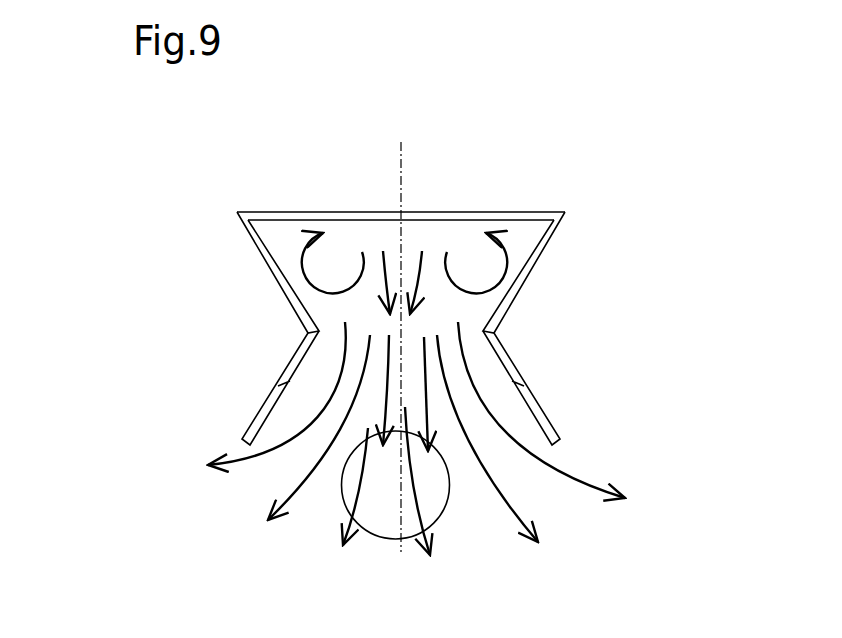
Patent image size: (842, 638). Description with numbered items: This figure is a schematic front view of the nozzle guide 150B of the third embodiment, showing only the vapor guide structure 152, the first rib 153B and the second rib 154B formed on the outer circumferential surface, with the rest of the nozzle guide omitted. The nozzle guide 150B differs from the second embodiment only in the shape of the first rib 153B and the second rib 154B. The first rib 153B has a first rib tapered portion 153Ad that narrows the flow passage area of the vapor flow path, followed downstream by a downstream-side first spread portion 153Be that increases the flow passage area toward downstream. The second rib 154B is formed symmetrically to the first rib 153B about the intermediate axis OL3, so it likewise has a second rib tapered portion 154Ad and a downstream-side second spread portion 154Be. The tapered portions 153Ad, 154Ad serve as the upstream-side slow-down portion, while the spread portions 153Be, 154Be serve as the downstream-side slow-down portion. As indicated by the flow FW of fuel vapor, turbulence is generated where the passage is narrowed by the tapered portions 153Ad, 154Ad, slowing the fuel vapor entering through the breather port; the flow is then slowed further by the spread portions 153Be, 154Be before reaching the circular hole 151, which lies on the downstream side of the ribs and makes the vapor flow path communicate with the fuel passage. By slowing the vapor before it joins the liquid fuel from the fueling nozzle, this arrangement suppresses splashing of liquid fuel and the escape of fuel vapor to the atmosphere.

The nozzle guide 150B is at (522, 165).
The vapor guide structure 152 is at (284, 209).
The first rib 153B is at (112, 310).
The first rib tapered portion 153Ad is at (270, 265).
The downstream-side first spread portion 153Be is at (259, 412).
The second rib 154B is at (688, 310).
The second rib tapered portion 154Ad is at (527, 268).
The downstream-side second spread portion 154Be is at (547, 424).
The circular hole 151 is at (377, 516).
The intermediate axis OL3 is at (401, 333).
The flow of fuel vapor FW is at (580, 480).